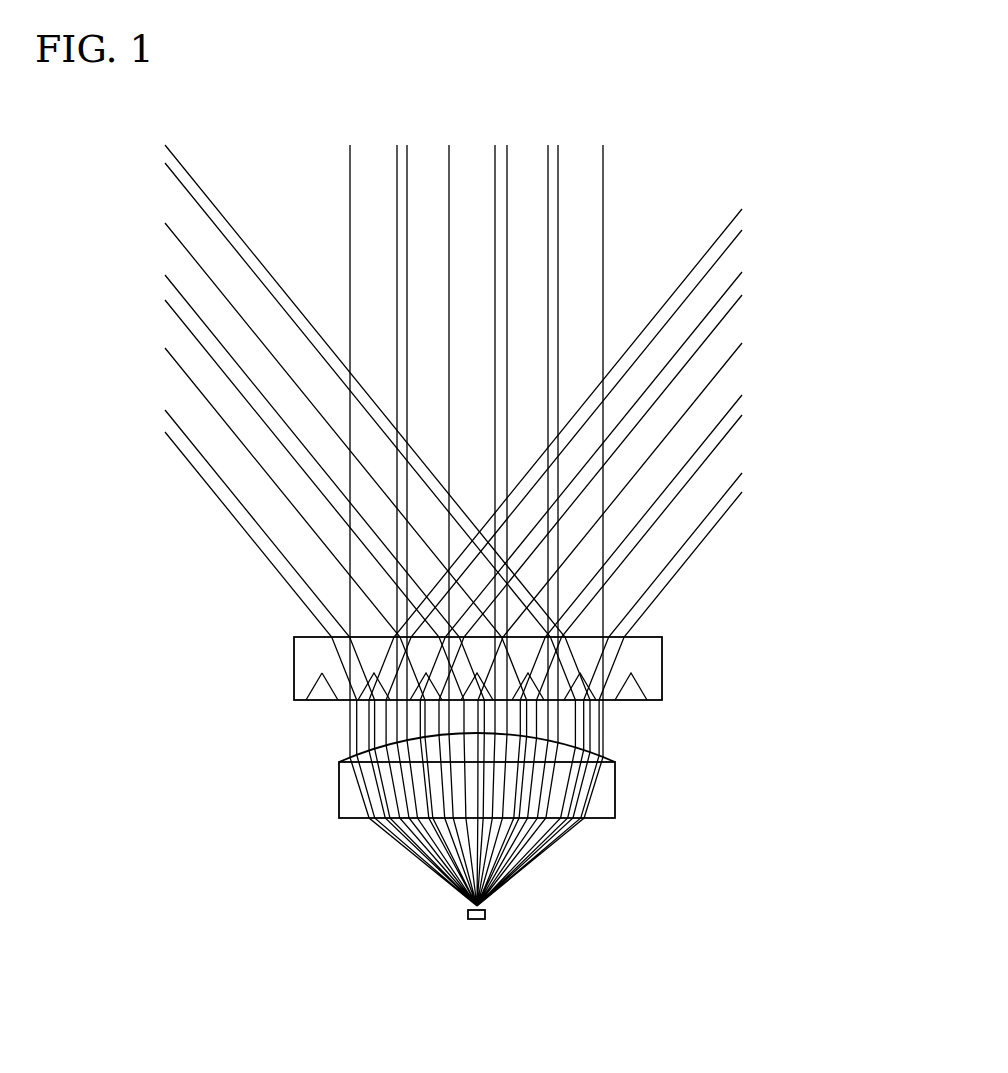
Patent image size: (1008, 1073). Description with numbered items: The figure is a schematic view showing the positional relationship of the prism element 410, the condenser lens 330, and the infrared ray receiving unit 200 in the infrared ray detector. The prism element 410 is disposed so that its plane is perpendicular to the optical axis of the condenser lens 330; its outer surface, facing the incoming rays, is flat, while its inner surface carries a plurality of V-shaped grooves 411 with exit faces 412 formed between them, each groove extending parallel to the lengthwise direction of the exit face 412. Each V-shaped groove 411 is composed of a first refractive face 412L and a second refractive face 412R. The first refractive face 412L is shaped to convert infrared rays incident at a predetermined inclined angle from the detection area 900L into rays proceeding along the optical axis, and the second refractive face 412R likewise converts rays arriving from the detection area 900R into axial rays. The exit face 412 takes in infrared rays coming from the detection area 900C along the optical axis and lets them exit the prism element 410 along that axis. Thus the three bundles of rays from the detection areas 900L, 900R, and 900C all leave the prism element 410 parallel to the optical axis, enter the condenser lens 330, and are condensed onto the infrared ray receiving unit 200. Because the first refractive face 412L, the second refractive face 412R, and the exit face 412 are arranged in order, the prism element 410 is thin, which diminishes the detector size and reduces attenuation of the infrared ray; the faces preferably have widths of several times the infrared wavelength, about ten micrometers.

The detection area 900C is at (476, 389).
The detection area 900L is at (331, 422).
The detection area 900R is at (597, 454).
The prism element 410 is at (613, 685).
The V-shaped groove 411 is at (632, 696).
The exit face 412 is at (342, 700).
The first refractive face 412L is at (312, 699).
The second refractive face 412R is at (333, 697).
The condenser lens 330 is at (612, 799).
The infrared ray receiving unit 200 is at (487, 906).